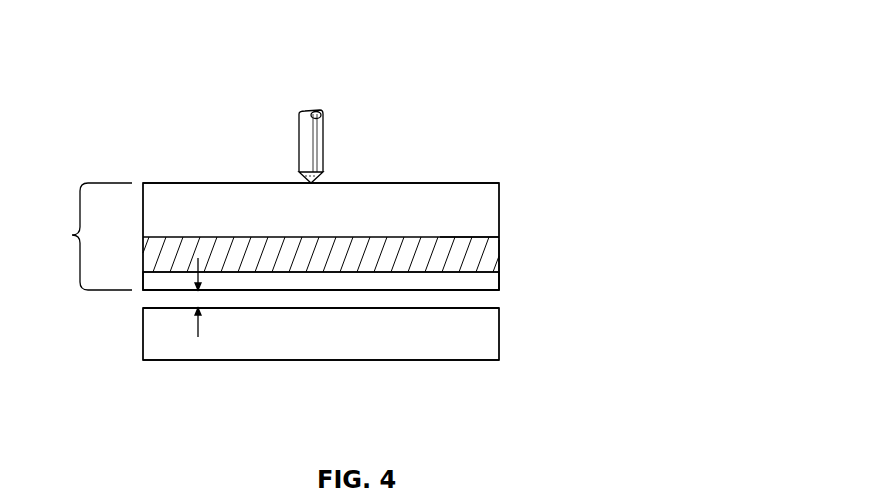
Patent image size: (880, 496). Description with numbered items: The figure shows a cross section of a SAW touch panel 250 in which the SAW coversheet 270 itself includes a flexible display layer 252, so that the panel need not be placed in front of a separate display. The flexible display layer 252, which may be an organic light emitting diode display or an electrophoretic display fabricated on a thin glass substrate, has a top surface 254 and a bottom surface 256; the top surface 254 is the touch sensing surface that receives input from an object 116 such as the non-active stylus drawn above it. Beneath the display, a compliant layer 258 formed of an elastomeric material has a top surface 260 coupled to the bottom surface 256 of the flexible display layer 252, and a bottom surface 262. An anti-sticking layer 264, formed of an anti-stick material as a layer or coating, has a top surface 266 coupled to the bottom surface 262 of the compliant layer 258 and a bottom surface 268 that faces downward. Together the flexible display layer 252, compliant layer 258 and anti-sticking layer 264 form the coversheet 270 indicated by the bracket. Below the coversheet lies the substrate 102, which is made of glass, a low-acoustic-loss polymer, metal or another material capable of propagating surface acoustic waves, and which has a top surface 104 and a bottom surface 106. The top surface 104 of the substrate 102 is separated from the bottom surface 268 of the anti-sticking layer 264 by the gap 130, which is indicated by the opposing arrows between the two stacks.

The substrate 102 is at (499, 338).
The top surface 104 is at (487, 308).
The bottom surface 106 is at (477, 360).
The object 116 is at (300, 147).
The gap 130 is at (196, 328).
The touch panel 250 is at (533, 92).
The flexible display layer 252 is at (499, 195).
The top surface 254 is at (445, 183).
The bottom surface 256 is at (477, 237).
The compliant layer 258 is at (470, 271).
The top surface 260 is at (458, 237).
The bottom surface 262 is at (499, 264).
The anti-sticking layer 264 is at (499, 278).
The top surface 266 is at (370, 273).
The bottom surface 268 is at (429, 291).
The SAW coversheet 270 is at (74, 236).